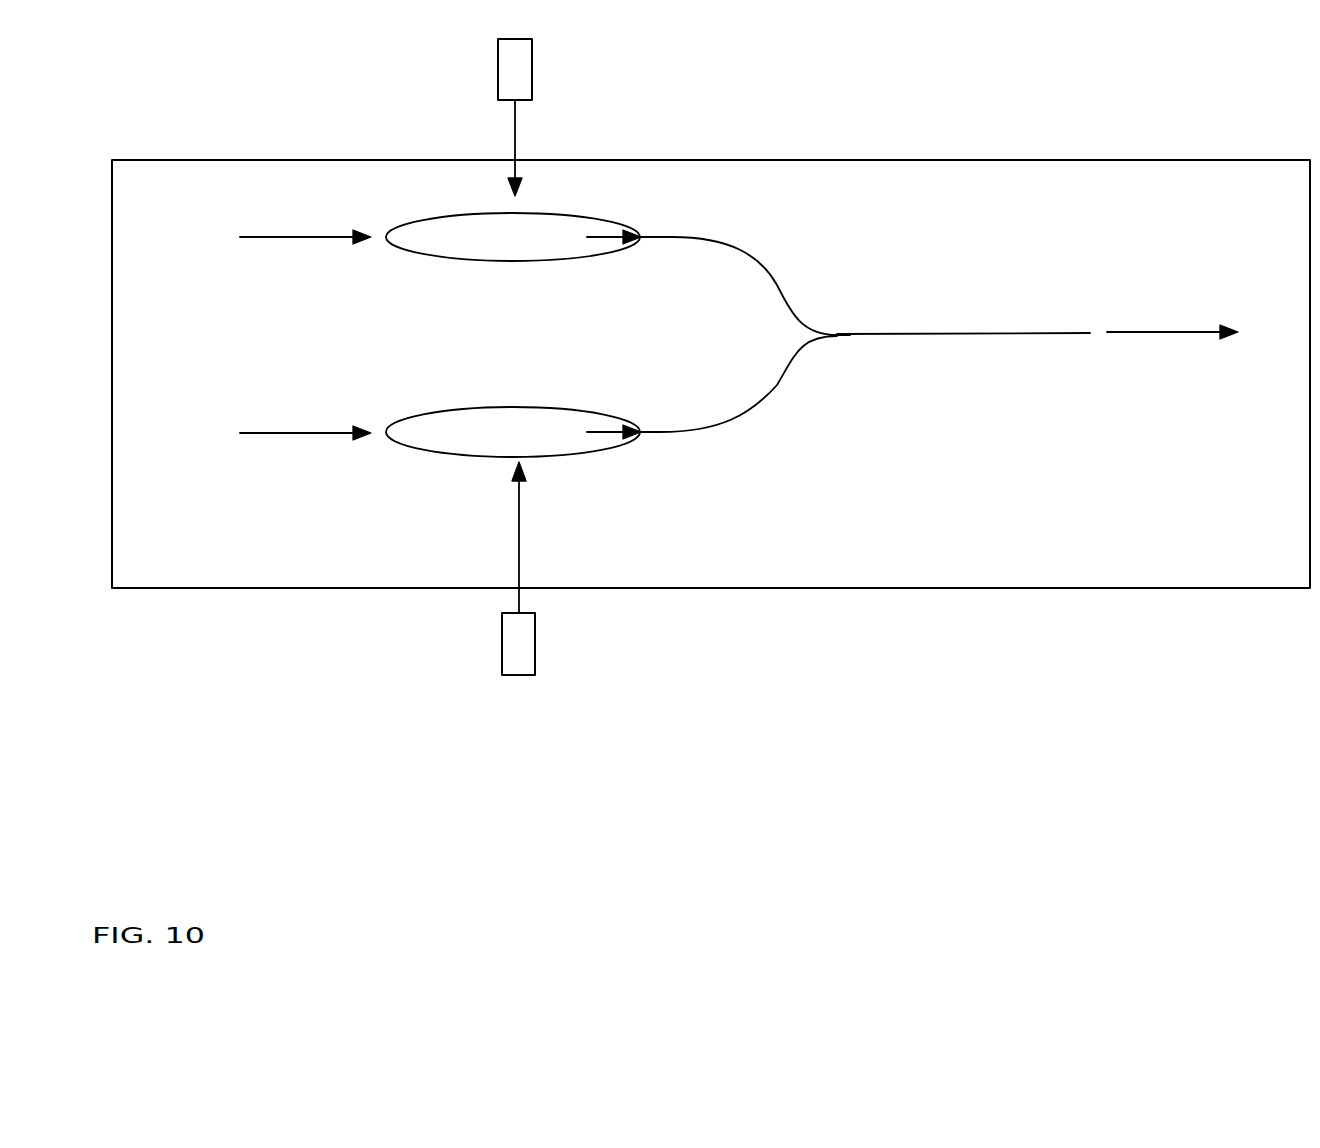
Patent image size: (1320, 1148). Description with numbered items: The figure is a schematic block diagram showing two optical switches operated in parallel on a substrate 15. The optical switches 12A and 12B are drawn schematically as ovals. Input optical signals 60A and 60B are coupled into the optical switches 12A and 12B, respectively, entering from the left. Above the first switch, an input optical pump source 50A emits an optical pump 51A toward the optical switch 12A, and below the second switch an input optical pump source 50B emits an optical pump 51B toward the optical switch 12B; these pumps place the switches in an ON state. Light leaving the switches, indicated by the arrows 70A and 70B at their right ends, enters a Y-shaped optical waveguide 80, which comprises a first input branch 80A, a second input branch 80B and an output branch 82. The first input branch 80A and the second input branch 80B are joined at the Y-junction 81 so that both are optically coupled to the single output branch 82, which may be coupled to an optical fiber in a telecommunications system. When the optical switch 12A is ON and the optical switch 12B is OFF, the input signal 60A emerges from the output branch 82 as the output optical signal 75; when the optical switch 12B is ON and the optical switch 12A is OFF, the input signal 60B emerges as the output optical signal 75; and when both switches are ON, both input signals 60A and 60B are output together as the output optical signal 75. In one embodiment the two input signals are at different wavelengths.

The substrate 15 is at (258, 580).
The optical switch 12A is at (451, 275).
The optical switch 12B is at (451, 470).
The input optical pump source 50A is at (532, 60).
The input optical pump source 50B is at (535, 637).
The optical pump 51A is at (515, 132).
The optical pump 51B is at (522, 603).
The input optical signal 60A is at (295, 238).
The input optical signal 60B is at (295, 433).
The first output light 70A is at (608, 235).
The second output light 70B is at (608, 430).
The Y-shaped optical waveguide 80 is at (867, 373).
The first input branch 80A is at (740, 255).
The second input branch 80B is at (690, 432).
The Y-junction 81 is at (833, 337).
The output branch 82 is at (1028, 333).
The output optical signal 75 is at (1197, 337).